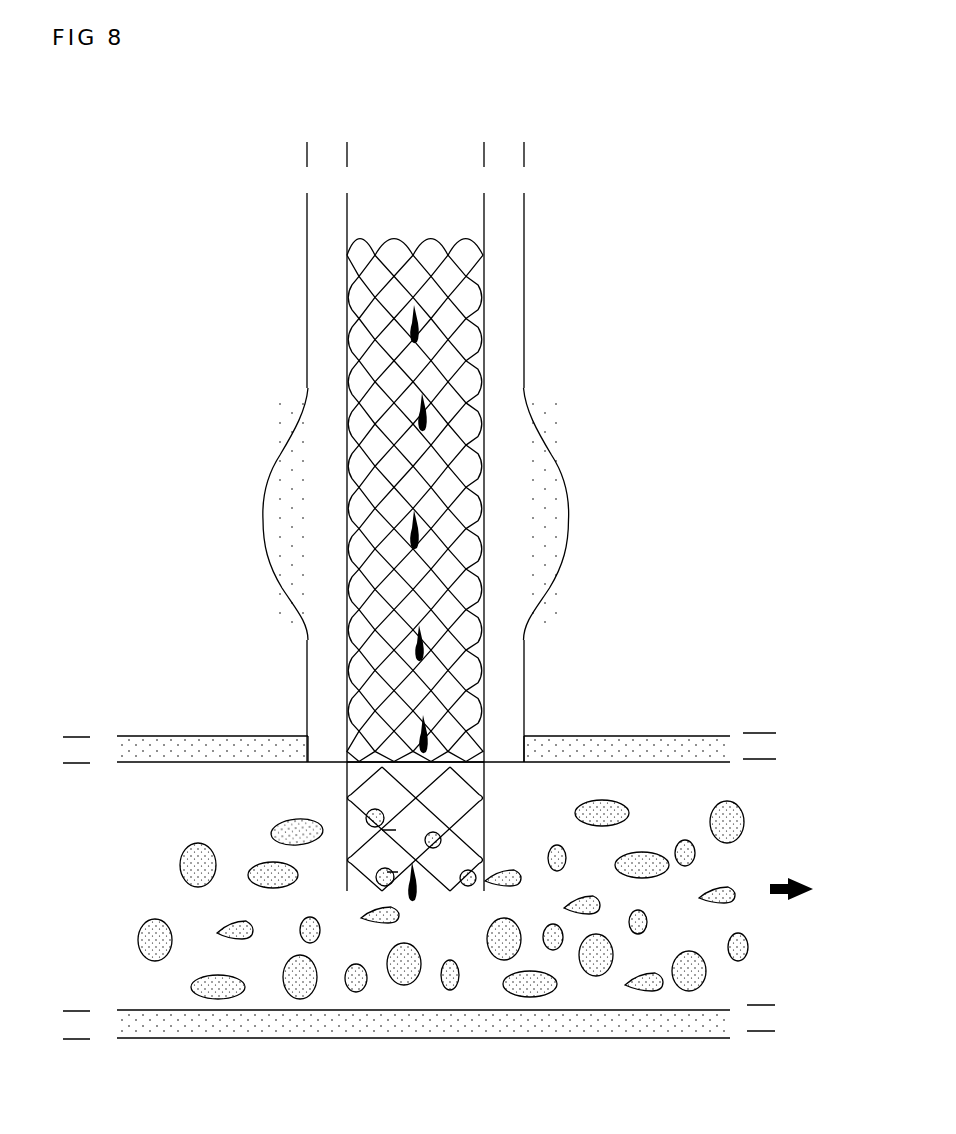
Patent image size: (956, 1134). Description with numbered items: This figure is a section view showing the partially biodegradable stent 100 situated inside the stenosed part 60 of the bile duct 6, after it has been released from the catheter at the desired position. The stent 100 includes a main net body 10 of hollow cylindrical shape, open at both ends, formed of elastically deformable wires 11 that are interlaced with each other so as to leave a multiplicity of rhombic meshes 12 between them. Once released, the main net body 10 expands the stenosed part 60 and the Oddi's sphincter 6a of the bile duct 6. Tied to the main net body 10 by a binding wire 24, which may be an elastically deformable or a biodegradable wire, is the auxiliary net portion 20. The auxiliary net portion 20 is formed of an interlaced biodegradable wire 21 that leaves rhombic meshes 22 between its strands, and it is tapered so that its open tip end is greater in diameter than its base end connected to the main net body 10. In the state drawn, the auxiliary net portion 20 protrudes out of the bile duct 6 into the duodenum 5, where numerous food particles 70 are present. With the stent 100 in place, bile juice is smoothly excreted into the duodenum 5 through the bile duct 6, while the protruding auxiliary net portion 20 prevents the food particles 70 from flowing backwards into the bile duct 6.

The partially biodegradable stent 100 is at (428, 163).
The bile duct 6 is at (513, 217).
The Oddi's sphincter 6a is at (347, 760).
The stenosed part 60 is at (552, 508).
The main net body 10 is at (492, 500).
The elastically deformable wires 11 is at (470, 315).
The rhombic meshes 12 is at (487, 465).
The binding wire 24 is at (378, 767).
The auxiliary net portion 20 is at (486, 779).
The biodegradable wire 21 is at (457, 843).
The rhombic meshes 22 is at (387, 870).
The duodenum 5 is at (656, 736).
The food particles 70 is at (216, 996).